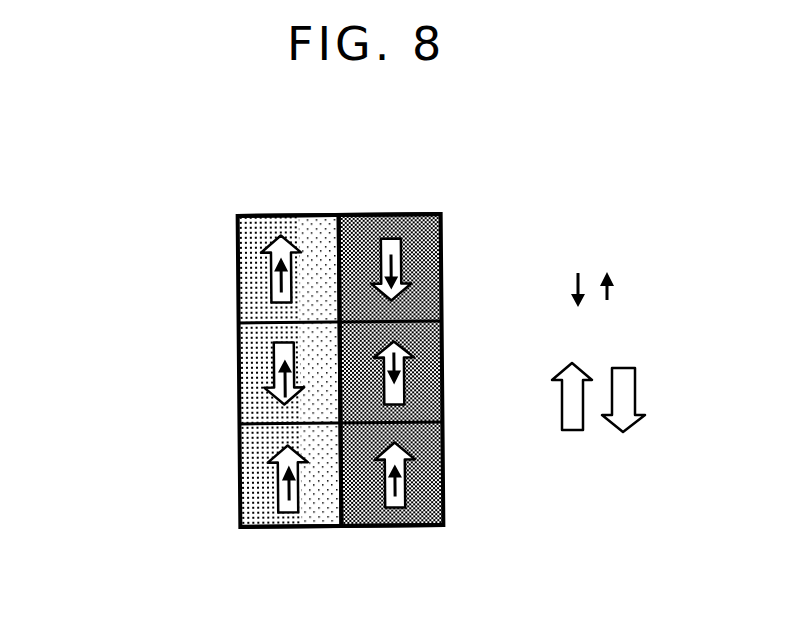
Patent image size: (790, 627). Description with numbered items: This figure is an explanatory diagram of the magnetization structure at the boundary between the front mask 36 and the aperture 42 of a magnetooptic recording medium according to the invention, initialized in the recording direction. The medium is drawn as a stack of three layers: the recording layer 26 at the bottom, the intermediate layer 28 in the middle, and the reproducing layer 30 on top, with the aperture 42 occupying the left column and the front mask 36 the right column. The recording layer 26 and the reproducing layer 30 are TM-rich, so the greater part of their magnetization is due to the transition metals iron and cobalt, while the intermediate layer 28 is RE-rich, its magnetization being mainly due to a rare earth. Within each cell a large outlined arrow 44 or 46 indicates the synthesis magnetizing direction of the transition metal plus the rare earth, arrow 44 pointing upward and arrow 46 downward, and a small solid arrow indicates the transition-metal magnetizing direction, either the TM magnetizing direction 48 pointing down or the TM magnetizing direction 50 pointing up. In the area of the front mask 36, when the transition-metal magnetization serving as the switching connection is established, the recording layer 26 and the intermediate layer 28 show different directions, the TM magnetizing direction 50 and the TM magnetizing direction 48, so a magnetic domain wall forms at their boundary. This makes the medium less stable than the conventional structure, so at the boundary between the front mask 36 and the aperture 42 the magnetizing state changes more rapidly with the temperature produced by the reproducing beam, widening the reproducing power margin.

The recording layer 26 is at (112, 489).
The intermediate layer 28 is at (108, 385).
The reproducing layer 30 is at (108, 285).
The front mask 36 is at (424, 232).
The aperture 42 is at (270, 221).
The synthesis magnetizing direction arrow 44 is at (262, 250).
The synthesis magnetizing direction arrow 46 is at (405, 281).
The TM magnetizing direction 48 is at (398, 257).
The TM magnetizing direction 50 is at (293, 282).